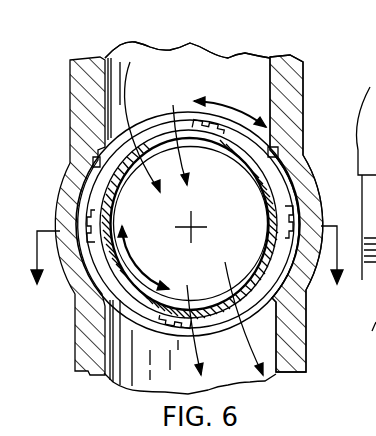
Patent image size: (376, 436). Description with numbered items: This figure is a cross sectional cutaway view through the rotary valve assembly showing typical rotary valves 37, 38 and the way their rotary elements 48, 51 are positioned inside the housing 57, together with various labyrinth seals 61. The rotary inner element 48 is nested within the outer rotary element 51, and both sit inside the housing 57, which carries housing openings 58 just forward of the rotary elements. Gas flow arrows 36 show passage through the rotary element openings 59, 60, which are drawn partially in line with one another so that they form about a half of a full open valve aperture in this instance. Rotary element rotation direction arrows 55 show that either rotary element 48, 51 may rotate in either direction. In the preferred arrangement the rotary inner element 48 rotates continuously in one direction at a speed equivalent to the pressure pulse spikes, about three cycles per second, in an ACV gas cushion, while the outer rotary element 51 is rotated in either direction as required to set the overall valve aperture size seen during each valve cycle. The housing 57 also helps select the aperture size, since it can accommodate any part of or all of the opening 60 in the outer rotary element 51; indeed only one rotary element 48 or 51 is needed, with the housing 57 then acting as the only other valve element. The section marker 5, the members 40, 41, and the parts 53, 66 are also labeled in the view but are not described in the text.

The section line 5- 5 is at (188, 270).
The gas flow arrows 36 is at (120, 98).
The rotary valve 37 is at (305, 147).
The rotary valve 38 is at (309, 213).
The support member 40 is at (228, 45).
The support member 41 is at (187, 50).
The rotary inner element 48 is at (260, 193).
The outer rotary element 51 is at (132, 331).
The adjacent member 53 is at (361, 342).
The rotary element rotation direction arrows 55 is at (262, 118).
The housing 57 is at (305, 82).
The housing openings 58 is at (217, 303).
The rotary element opening 59 is at (200, 140).
The rotary element opening 60 is at (148, 128).
The labyrinth seals 61 is at (278, 150).
The adjacent element 66 is at (365, 171).